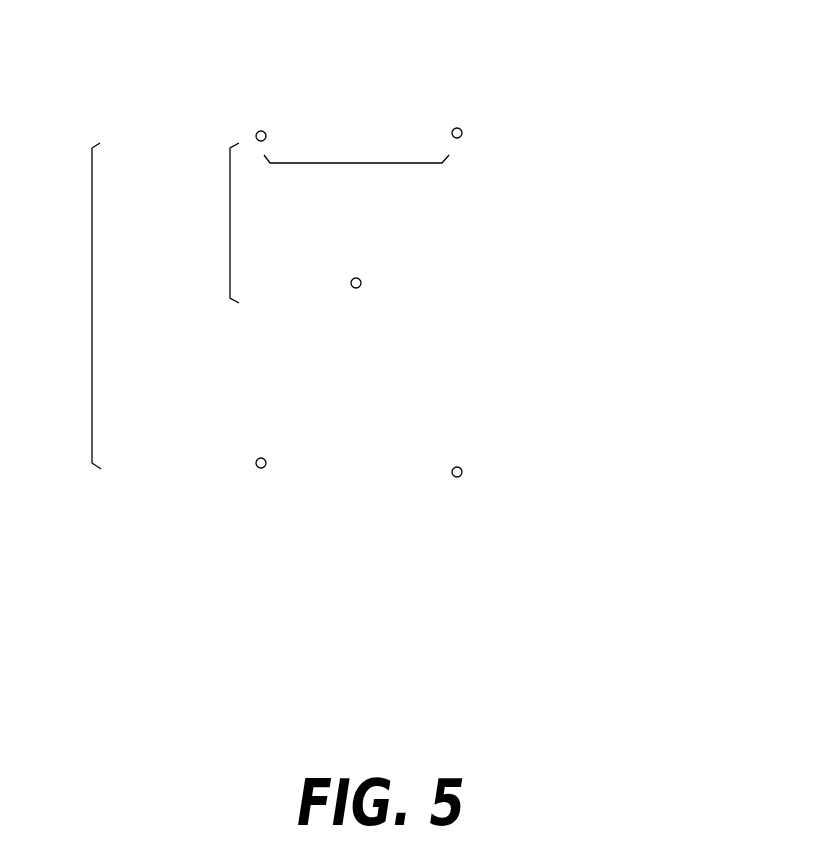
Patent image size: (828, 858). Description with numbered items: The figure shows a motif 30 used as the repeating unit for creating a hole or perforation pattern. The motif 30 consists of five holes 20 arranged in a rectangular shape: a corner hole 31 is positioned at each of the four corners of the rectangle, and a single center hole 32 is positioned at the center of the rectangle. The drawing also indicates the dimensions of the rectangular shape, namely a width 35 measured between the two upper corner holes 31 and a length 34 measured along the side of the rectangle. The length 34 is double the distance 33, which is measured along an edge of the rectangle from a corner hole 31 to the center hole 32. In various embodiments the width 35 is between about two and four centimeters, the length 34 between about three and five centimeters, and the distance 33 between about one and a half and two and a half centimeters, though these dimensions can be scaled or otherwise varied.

The holes 20 is at (468, 460).
The motif 30 is at (618, 386).
The corner hole 31 is at (263, 128).
The center hole 32 is at (364, 295).
The distance 33 is at (230, 226).
The length 34 is at (92, 282).
The width 35 is at (362, 163).